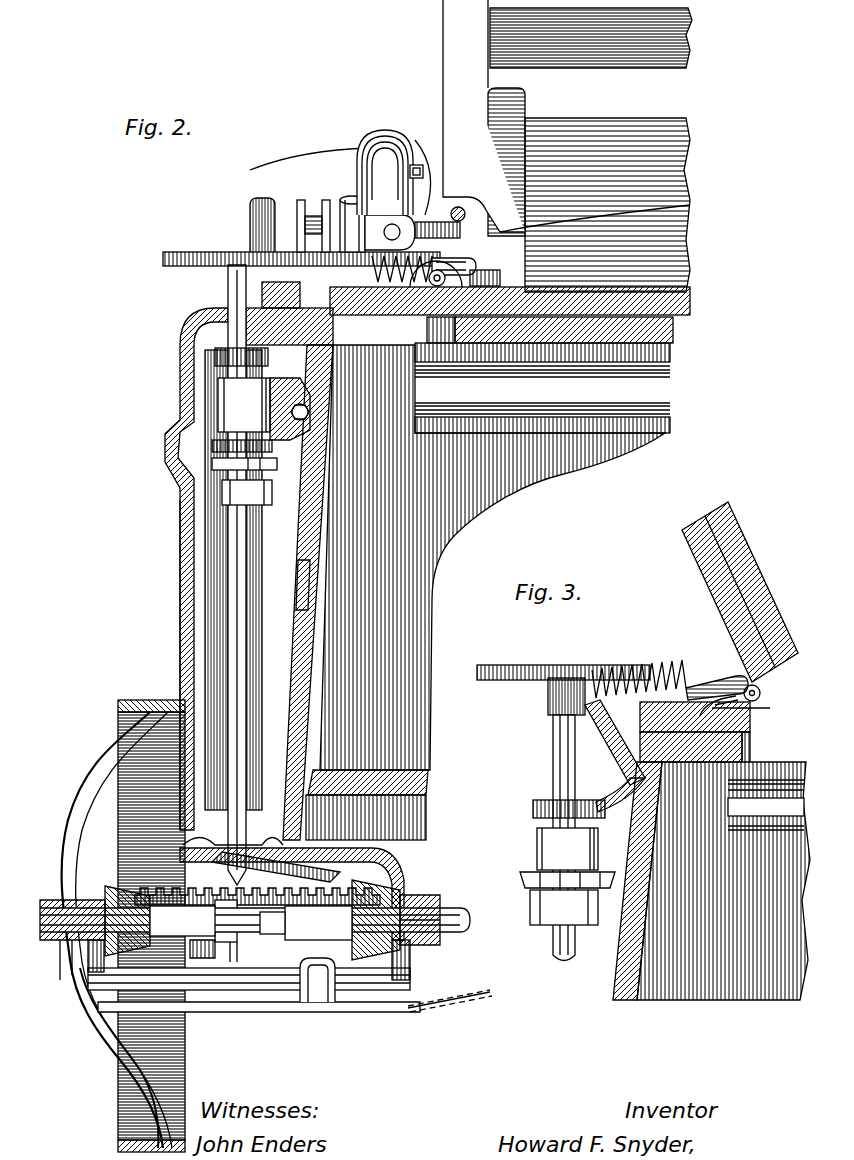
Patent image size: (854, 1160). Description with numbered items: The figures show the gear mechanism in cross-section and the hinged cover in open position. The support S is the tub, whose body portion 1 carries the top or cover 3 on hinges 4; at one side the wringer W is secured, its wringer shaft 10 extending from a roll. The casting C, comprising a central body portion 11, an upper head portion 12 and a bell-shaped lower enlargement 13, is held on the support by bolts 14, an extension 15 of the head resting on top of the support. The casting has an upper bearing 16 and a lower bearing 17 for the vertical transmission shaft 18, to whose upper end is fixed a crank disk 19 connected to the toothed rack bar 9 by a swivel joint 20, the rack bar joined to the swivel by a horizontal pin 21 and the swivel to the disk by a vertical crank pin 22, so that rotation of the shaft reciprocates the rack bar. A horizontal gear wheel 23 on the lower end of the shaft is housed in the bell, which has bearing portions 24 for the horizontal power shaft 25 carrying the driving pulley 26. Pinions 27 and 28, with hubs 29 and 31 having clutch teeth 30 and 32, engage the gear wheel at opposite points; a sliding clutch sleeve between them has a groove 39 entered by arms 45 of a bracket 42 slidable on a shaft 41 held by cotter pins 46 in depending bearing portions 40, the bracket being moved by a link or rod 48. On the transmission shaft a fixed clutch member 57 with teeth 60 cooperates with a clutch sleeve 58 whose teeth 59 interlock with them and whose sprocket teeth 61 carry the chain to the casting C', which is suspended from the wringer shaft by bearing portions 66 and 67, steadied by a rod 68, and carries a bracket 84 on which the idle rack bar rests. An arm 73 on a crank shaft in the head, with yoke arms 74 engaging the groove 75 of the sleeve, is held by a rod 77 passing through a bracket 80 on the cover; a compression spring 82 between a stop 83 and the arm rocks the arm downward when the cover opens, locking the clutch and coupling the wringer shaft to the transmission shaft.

In FIG. 2, the body portion 1 is at (512, 468).
In FIG. 2, the top or cover 3 is at (672, 302).
In FIG. 3, the top or cover 3 is at (750, 568).
In FIG. 2, the hinges 4 is at (504, 252).
In FIG. 2, the toothed rack bar 9 is at (440, 212).
In FIG. 2, the wringer shaft 10 is at (438, 205).
In FIG. 2, the central body portion 11 is at (210, 581).
In FIG. 2, the upper head portion 12 is at (192, 318).
In FIG. 2, the lower enlargement (bell) 13 is at (340, 872).
In FIG. 2, the bolts 14 is at (420, 366).
In FIG. 2, the extension 15 is at (380, 216).
In FIG. 2, the upper bearing 16 is at (228, 305).
In FIG. 2, the lower bearing 17 is at (225, 842).
In FIG. 2, the vertical transmission shaft 18 is at (240, 668).
In FIG. 3, the vertical transmission shaft 18 is at (572, 952).
In FIG. 2, the crank disk 19 is at (172, 252).
In FIG. 3, the crank disk 19 is at (510, 676).
In FIG. 2, the swivel joint 20 is at (390, 135).
In FIG. 2, the horizontal pin 21 is at (414, 162).
In FIG. 2, the vertical crank pin 22 is at (348, 196).
In FIG. 2, the horizontal gear wheel 23 is at (392, 872).
In FIG. 2, the bearing portions 24 is at (425, 945).
In FIG. 2, the horizontal power shaft 25 is at (438, 918).
In FIG. 2, the driving pulley 26 is at (100, 770).
In FIG. 2, the pinion 27 is at (130, 940).
In FIG. 2, the pinion 28 is at (372, 960).
In FIG. 2, the hub 29 is at (170, 936).
In FIG. 2, the clutch teeth 30 is at (224, 922).
In FIG. 2, the hub 31 is at (340, 940).
In FIG. 2, the clutch teeth 32 is at (318, 1012).
In FIG. 2, the groove 39 is at (200, 960).
In FIG. 2, the depending bearing portions 40 is at (408, 965).
In FIG. 2, the shaft 41 is at (384, 990).
In FIG. 2, the bracket 42 is at (280, 1012).
In FIG. 2, the arms 45 is at (236, 962).
In FIG. 2, the cotter pins 46 is at (80, 1000).
In FIG. 2, the link or rod 48 is at (440, 1006).
In FIG. 2, the clutch member 57 is at (232, 496).
In FIG. 3, the clutch member 57 is at (548, 905).
In FIG. 2, the clutch sleeve 58 is at (240, 394).
In FIG. 3, the clutch sleeve 58 is at (548, 850).
In FIG. 2, the teeth 59 is at (224, 448).
In FIG. 2, the teeth 60 is at (240, 472).
In FIG. 2, the sprocket teeth 61 is at (165, 423).
In FIG. 2, the bearing portion 66 is at (310, 216).
In FIG. 2, the bearing portion 67 is at (418, 138).
In FIG. 2, the rod 68 is at (292, 412).
In FIG. 3, the arm 73 is at (603, 740).
In FIG. 3, the yoke arms 74 is at (604, 812).
In FIG. 2, the groove 75 is at (232, 372).
In FIG. 3, the groove 75 is at (536, 814).
In FIG. 2, the rod 77 is at (445, 260).
In FIG. 3, the rod 77 is at (700, 686).
In FIG. 2, the bracket 80 is at (560, 236).
In FIG. 2, the compression spring 82 is at (500, 278).
In FIG. 3, the compression spring 82 is at (660, 672).
In FIG. 2, the stop 83 is at (440, 270).
In FIG. 3, the stop 83 is at (690, 690).
In FIG. 2, the bracket 84 is at (250, 228).
In FIG. 2, the wringer W is at (680, 148).
In FIG. 2, the casting C is at (159, 665).
In FIG. 2, the casting C' is at (296, 172).
In FIG. 2, the support or frame-work S is at (292, 647).